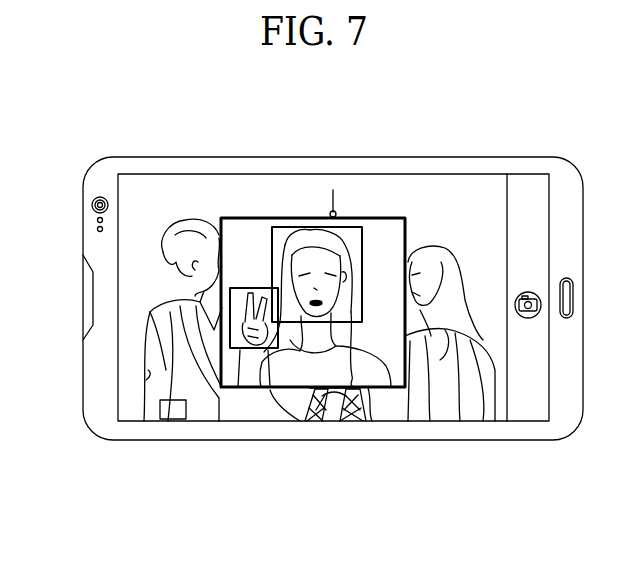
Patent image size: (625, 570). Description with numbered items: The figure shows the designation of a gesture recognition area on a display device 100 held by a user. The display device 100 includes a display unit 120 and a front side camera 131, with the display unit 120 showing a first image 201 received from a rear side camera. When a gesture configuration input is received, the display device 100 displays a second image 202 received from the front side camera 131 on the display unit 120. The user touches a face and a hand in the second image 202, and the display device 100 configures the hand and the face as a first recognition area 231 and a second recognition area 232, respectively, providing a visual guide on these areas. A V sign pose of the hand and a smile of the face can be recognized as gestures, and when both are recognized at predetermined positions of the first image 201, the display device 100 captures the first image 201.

The display device 100 is at (350, 157).
The display unit 120 is at (476, 190).
The front side camera 131 is at (95, 206).
The first image 201 is at (191, 187).
The second image 202 is at (385, 388).
The first recognition area 231 is at (228, 388).
The second recognition area 232 is at (297, 225).